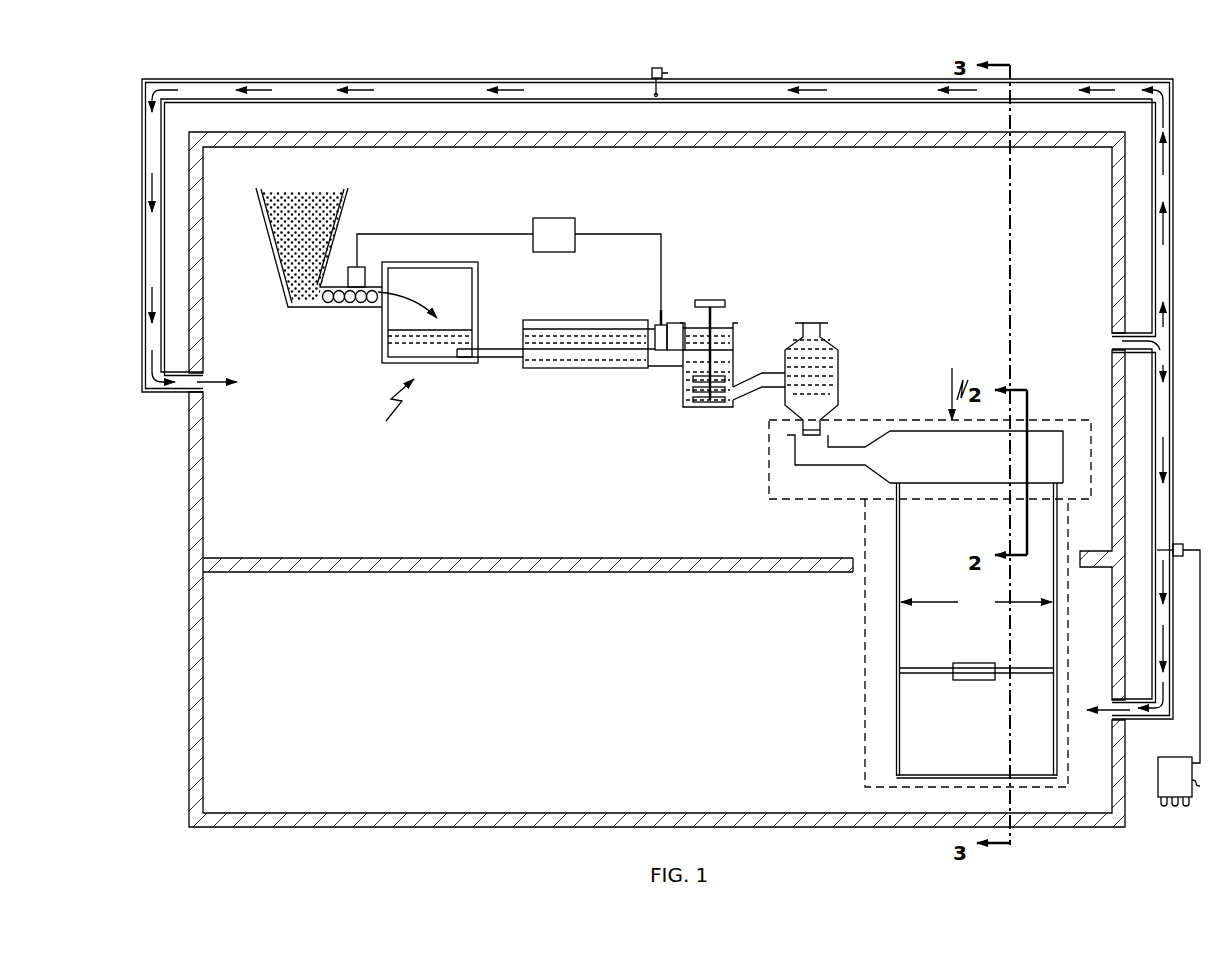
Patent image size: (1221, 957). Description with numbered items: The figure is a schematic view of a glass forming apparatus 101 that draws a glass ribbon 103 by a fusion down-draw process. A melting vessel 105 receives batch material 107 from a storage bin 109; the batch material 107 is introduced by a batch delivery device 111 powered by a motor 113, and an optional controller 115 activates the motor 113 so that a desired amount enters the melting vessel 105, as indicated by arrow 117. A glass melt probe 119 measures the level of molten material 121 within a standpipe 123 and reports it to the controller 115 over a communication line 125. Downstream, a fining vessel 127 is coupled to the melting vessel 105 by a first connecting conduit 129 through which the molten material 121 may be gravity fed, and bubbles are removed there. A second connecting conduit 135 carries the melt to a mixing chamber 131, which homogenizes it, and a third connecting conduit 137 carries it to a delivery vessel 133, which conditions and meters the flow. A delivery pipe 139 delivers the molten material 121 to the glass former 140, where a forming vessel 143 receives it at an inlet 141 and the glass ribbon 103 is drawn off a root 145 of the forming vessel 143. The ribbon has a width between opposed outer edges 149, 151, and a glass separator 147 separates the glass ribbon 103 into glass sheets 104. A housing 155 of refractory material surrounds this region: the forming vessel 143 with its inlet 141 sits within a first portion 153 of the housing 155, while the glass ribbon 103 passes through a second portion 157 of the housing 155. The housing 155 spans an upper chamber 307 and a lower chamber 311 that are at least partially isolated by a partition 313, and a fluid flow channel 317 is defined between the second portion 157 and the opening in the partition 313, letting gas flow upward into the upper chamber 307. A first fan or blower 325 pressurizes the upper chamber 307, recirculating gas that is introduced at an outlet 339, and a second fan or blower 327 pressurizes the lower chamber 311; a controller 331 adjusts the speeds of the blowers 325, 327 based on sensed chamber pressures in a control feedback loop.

The glass forming apparatus 101 is at (1101, 64).
The glass ribbon 103 is at (962, 488).
The glass sheet 104 is at (910, 733).
The melting vessel 105 is at (392, 413).
The batch material 107 is at (295, 195).
The storage bin 109 is at (270, 248).
The batch delivery device 111 is at (340, 303).
The motor 113 is at (360, 267).
The controller 115 is at (555, 217).
The arrow 117 is at (395, 295).
The glass melt probe 119 is at (657, 312).
The molten material 121 is at (455, 330).
The standpipe 123 is at (672, 323).
The communication line 125 is at (617, 233).
The fining vessel 127 is at (582, 320).
The first connecting conduit 129 is at (500, 346).
The mixing chamber 131 is at (735, 343).
The delivery vessel 133 is at (838, 357).
The second connecting conduit 135 is at (672, 366).
The third connecting conduit 137 is at (747, 398).
The delivery pipe 139 is at (824, 425).
The glass former 140 is at (967, 381).
The inlet 141 is at (795, 444).
The forming vessel 143 is at (915, 430).
The root 145 is at (985, 487).
The glass separator 147 is at (977, 688).
The outer edge 149 is at (896, 567).
The outer edge 151 is at (1060, 580).
The first portion of housing 153 is at (1073, 420).
The housing 155 is at (1040, 378).
The second portion of housing 157 is at (865, 615).
The upper chamber 307 is at (1103, 225).
The lower chamber 311 is at (220, 711).
The partition 313 is at (578, 557).
The fluid flow channel 317 is at (880, 563).
The first fan or blower 325 is at (650, 66).
The second fan or blower 327 is at (1180, 540).
The controller 331 is at (1156, 788).
The outlet 339 is at (206, 386).